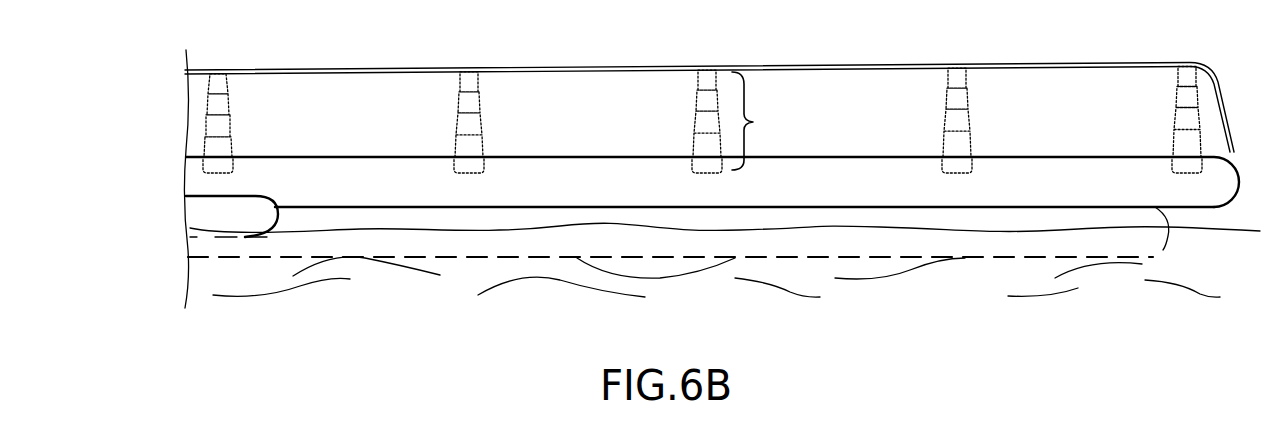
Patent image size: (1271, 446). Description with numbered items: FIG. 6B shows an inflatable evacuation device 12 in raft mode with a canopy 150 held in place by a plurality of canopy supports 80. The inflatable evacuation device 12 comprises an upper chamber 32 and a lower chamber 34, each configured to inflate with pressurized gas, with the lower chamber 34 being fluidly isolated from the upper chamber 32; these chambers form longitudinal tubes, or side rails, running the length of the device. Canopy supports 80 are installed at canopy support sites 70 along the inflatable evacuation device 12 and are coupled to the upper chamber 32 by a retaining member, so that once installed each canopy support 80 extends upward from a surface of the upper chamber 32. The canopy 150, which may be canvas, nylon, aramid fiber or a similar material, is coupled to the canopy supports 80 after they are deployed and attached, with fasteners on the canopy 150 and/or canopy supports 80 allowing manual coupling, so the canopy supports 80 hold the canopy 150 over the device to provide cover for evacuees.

The inflatable evacuation device 12 is at (162, 182).
The upper chamber 32 is at (1108, 177).
The lower chamber 34 is at (1033, 230).
The canopy support site 70 is at (483, 168).
The canopy support 80 is at (756, 121).
The canopy 150 is at (377, 70).